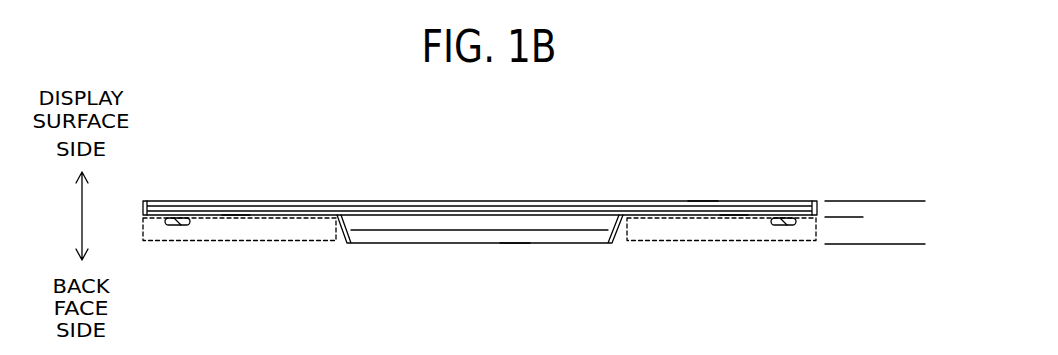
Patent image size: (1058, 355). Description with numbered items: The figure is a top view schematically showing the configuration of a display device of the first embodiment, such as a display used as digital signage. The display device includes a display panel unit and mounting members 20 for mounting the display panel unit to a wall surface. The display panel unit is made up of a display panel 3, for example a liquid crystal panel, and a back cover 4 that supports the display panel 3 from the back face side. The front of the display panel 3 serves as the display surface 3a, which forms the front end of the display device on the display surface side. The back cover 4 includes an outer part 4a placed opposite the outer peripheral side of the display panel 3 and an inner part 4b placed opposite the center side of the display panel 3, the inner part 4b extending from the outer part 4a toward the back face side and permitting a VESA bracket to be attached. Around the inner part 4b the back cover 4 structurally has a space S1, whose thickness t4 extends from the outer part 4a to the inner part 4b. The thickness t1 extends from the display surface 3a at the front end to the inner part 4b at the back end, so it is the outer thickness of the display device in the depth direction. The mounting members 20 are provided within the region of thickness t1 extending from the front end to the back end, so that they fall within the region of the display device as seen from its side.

The display panel 3 is at (431, 188).
The display surface 3a is at (703, 200).
The back cover 4 is at (430, 262).
The outer part 4a is at (236, 216).
The inner part 4b is at (515, 244).
The mounting members 20 is at (176, 226).
The space S1 is at (283, 241).
The thickness t4 is at (851, 217).
The thickness t1 is at (909, 201).